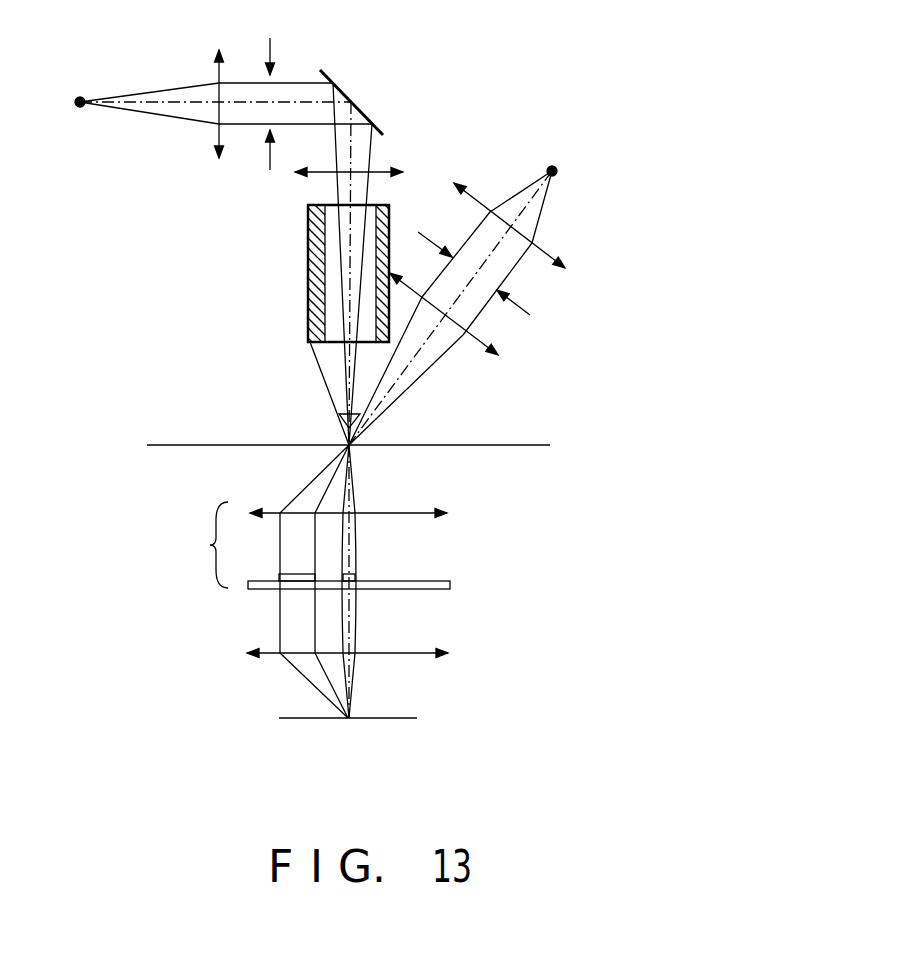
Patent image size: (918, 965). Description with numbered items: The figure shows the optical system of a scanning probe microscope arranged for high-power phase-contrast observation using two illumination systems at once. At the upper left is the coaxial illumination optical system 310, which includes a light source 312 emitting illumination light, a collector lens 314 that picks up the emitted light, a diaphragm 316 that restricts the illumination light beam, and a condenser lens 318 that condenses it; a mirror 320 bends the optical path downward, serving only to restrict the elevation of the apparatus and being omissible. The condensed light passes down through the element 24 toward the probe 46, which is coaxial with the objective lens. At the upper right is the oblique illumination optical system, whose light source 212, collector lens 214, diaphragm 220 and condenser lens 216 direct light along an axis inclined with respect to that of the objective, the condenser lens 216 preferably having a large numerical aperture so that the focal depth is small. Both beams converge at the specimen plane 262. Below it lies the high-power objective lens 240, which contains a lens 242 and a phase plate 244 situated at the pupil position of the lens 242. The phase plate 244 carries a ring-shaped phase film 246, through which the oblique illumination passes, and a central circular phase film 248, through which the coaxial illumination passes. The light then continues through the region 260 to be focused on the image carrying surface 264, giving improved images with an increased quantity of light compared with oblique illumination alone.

The coaxial illumination optical system 310 is at (178, 65).
The light source 312 is at (80, 115).
The collector lens 314 is at (205, 152).
The diaphragm 316 is at (307, 38).
The condenser lens 318 is at (300, 170).
The mirror 320 is at (353, 98).
The objective lens housing 24 is at (308, 267).
The probe 46 is at (347, 427).
The light source 212 is at (560, 168).
The collector lens 214 is at (567, 258).
The condenser lens 216 is at (500, 345).
The diaphragm 220 is at (533, 307).
The object plane 262 is at (540, 449).
The high-power objective lens 240 is at (259, 581).
The lens 242 is at (450, 511).
The phase plate 244 is at (450, 587).
The ring-shaped phase film 246 is at (284, 574).
The circular phase film 248 is at (355, 573).
The beam width 260 is at (437, 658).
The image carrying surface 264 is at (417, 719).